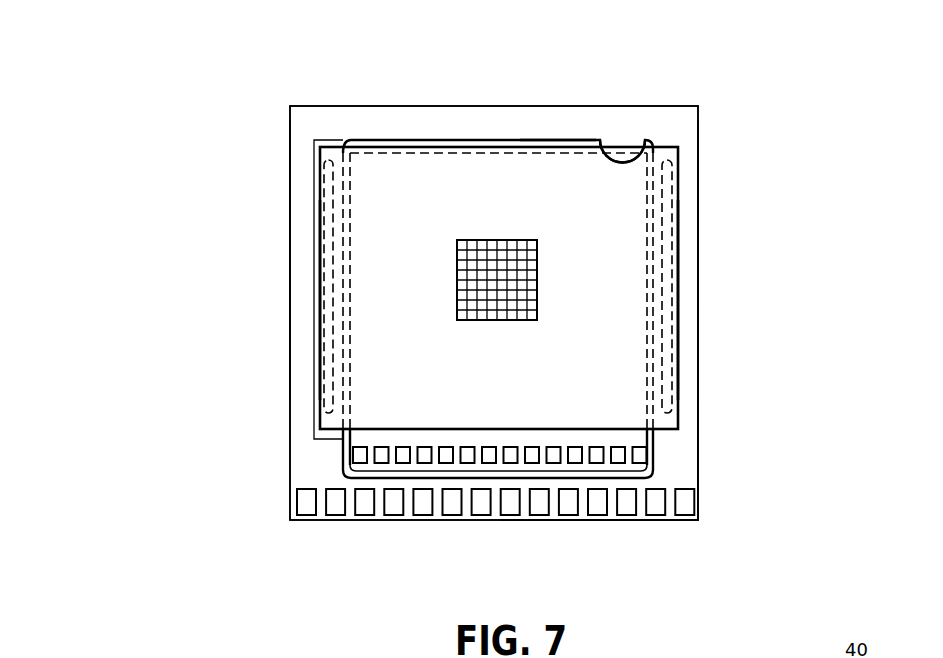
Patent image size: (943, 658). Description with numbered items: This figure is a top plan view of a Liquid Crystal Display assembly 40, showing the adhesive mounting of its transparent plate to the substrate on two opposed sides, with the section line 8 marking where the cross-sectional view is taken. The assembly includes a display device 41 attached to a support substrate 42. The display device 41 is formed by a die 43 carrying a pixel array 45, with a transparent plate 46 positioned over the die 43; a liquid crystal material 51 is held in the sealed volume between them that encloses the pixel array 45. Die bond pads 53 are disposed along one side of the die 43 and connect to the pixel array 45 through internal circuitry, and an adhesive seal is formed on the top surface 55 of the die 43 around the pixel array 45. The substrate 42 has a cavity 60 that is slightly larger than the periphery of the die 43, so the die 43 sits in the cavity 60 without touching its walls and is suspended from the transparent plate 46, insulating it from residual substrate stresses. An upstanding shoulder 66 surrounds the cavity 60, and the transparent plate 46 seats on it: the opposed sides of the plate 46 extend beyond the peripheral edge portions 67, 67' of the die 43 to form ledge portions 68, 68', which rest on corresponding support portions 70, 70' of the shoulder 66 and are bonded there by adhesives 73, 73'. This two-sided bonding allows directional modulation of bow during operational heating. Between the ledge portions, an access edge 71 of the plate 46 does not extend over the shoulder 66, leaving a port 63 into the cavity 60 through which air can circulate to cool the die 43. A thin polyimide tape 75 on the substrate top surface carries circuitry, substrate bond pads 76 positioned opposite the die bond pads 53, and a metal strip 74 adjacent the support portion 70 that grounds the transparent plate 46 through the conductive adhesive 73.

The section line 8- 8 is at (289, 288).
The LCD assembly 40 is at (160, 392).
The display device 41 is at (690, 134).
The support substrate 42 is at (712, 423).
The die 43 is at (340, 455).
The pixel array 45 is at (528, 250).
The transparent plate 46 is at (560, 136).
The liquid crystal material 51 is at (499, 362).
The die bond pads 53 is at (442, 466).
The top surface of the die 55 is at (638, 435).
The cavity 60 is at (633, 482).
The port 63 is at (487, 140).
The shoulder 66 is at (645, 150).
The peripheral edge portion 67 is at (261, 291).
The peripheral edge portion 67' is at (732, 291).
The ledge portion 68 is at (263, 300).
The ledge portion 68' is at (745, 300).
The support portion 70 is at (250, 260).
The support portion 70' is at (736, 260).
The access edge 71 is at (425, 140).
The adhesive 73 is at (228, 286).
The adhesive 73' is at (753, 284).
The metal strip 74 is at (316, 141).
The polyimide tape 75 is at (300, 470).
The substrate bond pads 76 is at (537, 507).